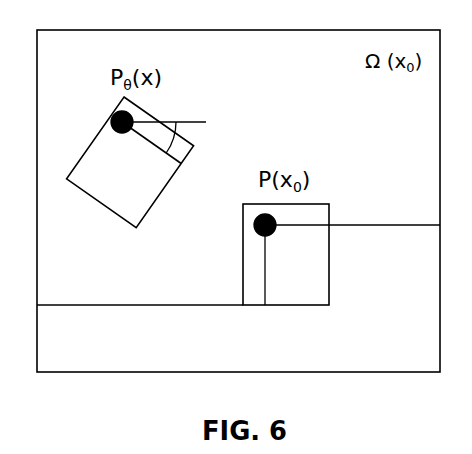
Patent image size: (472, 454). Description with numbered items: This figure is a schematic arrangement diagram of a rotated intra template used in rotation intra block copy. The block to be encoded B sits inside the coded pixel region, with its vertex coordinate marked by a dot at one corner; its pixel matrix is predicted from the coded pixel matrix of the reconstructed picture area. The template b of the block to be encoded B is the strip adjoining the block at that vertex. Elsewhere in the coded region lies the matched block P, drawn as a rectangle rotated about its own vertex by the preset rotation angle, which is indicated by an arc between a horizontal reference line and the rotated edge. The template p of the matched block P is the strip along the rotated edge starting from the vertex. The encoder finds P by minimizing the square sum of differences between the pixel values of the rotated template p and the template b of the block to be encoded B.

The matched block P is at (130, 188).
The template of P p is at (82, 170).
The block to be encoded B is at (306, 277).
The template of the block to be encoded b is at (252, 284).